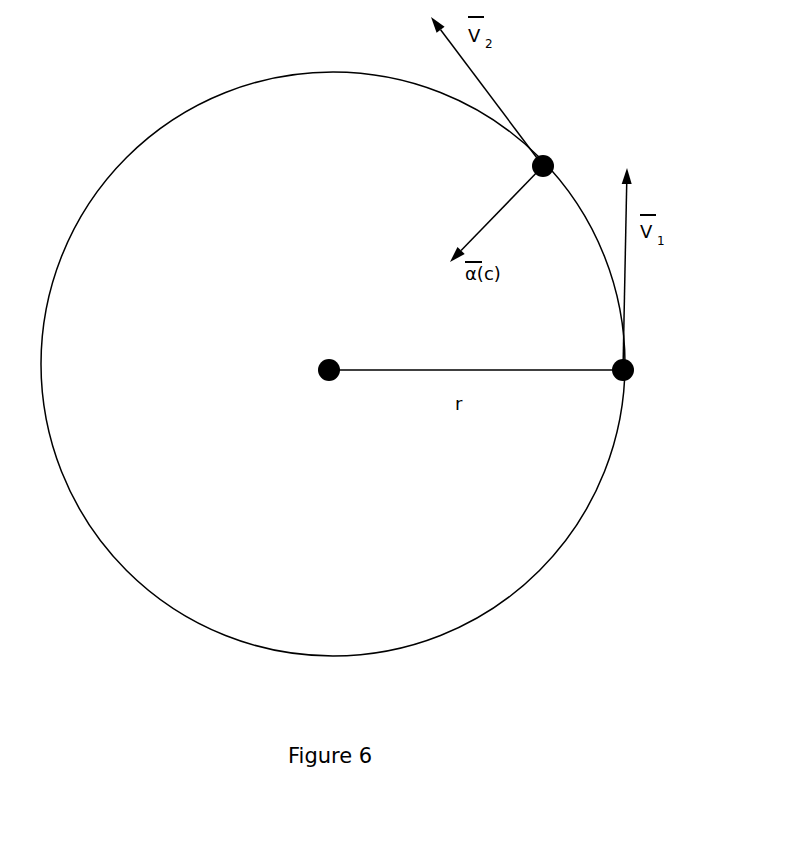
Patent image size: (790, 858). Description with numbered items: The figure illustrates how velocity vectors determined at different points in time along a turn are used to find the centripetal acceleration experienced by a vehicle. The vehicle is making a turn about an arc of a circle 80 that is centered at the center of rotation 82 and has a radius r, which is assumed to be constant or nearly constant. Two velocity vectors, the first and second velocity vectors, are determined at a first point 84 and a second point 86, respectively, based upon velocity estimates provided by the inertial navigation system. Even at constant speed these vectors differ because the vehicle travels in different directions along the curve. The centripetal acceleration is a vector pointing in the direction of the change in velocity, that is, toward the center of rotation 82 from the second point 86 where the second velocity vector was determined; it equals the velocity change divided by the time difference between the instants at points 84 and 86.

The circle 80 is at (165, 123).
The center of rotation 82 is at (320, 362).
The first point 84 is at (634, 370).
The second point 86 is at (543, 166).